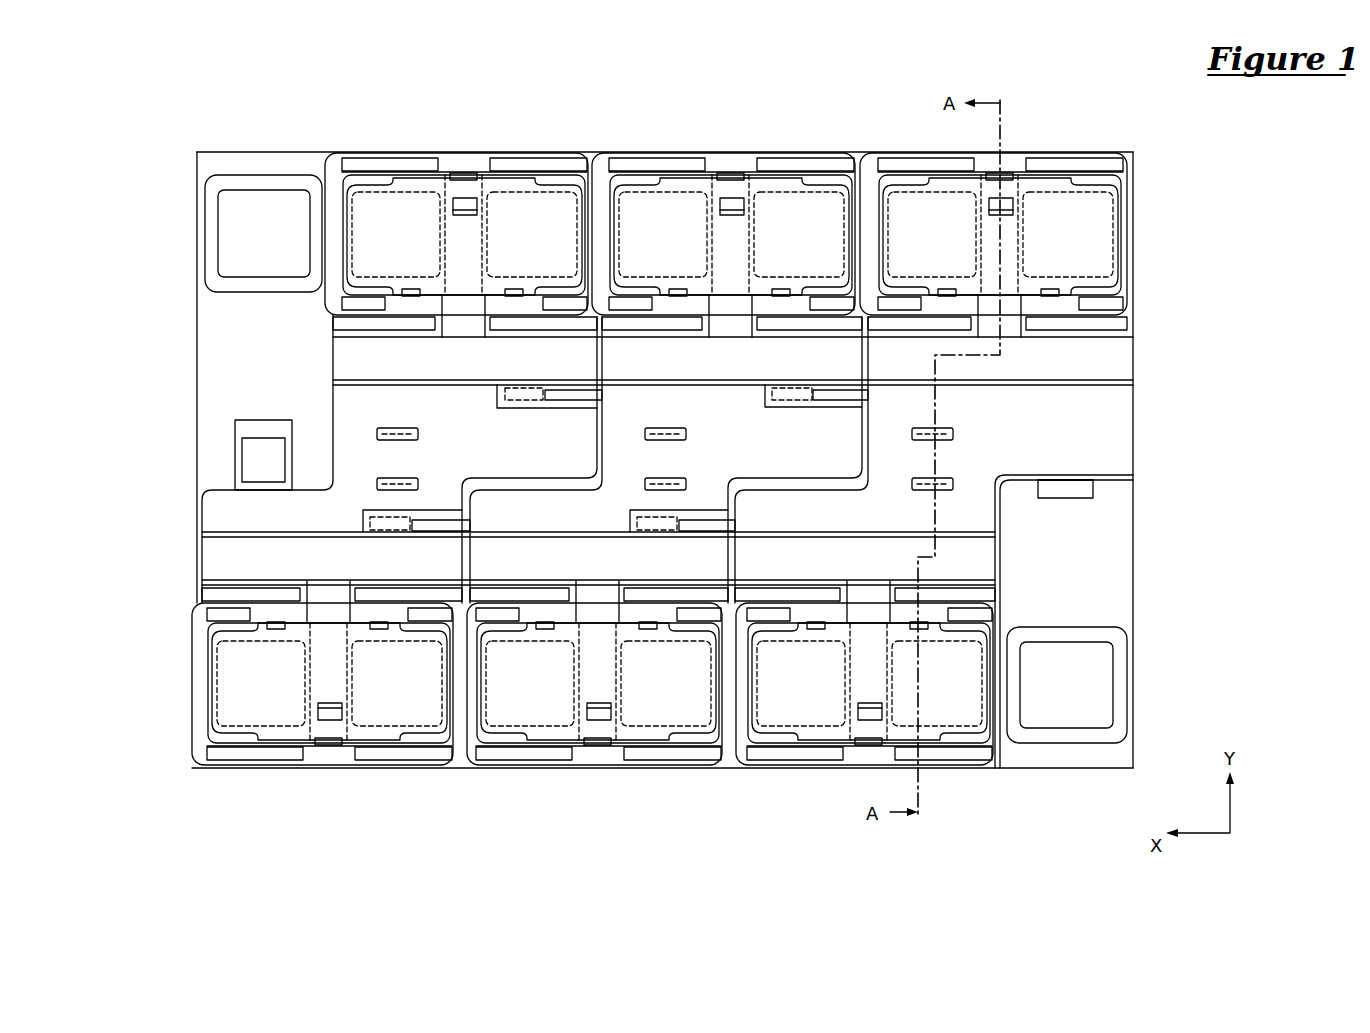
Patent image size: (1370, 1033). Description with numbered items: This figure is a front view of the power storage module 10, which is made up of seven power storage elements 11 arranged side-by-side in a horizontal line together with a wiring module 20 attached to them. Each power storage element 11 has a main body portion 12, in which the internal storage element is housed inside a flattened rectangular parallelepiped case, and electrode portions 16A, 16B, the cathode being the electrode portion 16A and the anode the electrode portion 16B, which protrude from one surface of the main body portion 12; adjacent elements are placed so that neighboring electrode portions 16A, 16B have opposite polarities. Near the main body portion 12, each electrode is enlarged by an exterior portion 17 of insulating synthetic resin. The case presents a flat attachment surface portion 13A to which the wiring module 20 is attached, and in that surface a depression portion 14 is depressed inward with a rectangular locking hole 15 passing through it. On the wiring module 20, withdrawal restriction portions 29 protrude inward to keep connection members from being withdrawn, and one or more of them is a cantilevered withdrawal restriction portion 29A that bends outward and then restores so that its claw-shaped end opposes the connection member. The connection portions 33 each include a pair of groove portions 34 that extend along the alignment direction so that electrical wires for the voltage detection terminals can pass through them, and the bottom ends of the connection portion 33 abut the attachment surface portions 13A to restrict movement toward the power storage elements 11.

The power storage module 10 is at (1128, 111).
The power storage element 11 is at (1065, 786).
The main body portion 12 is at (197, 276).
The attachment surface portion 13A is at (207, 326).
The depression portion 14 is at (250, 428).
The locking hole 15 is at (252, 463).
The electrode portion 16A is at (262, 218).
The electrode portion 16B is at (400, 185).
The exterior portion 17 is at (228, 175).
The wiring module 20 is at (1088, 571).
The withdrawal restriction portion 29 is at (410, 289).
The withdrawal restriction portion 29A is at (463, 173).
The connection portion 33 is at (215, 514).
The groove portion 34 is at (240, 574).